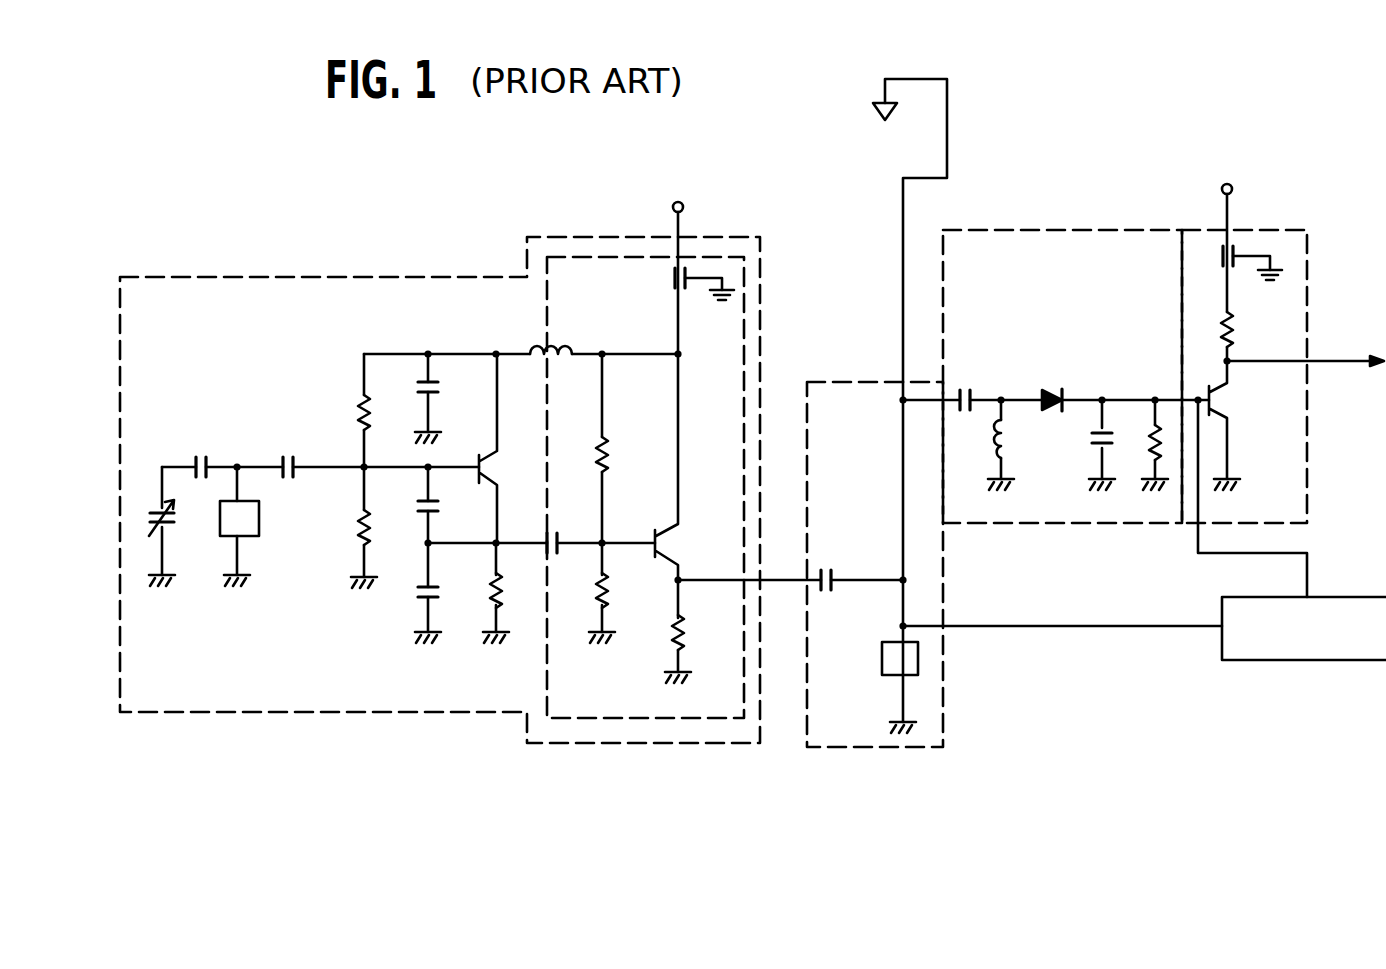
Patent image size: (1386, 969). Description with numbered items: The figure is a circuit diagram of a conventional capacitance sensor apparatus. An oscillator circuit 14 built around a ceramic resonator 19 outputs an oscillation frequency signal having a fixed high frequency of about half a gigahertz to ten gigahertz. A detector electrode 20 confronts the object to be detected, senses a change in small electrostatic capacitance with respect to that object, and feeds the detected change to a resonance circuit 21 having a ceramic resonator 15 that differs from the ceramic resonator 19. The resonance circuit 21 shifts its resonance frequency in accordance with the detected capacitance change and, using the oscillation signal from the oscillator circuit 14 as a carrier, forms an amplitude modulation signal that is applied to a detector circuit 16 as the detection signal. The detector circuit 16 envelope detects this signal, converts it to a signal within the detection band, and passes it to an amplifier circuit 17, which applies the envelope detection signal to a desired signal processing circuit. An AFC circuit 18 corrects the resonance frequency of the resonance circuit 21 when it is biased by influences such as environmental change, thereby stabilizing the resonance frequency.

The oscillator circuit 14 is at (253, 273).
The ceramic resonator 15 is at (882, 658).
The detector circuit 16 is at (1062, 228).
The amplifier circuit 17 is at (1275, 228).
The AFC circuit 18 is at (1318, 660).
The ceramic resonator 19 is at (260, 518).
The detector electrode 20 is at (873, 106).
The resonance circuit 21 is at (1014, 565).